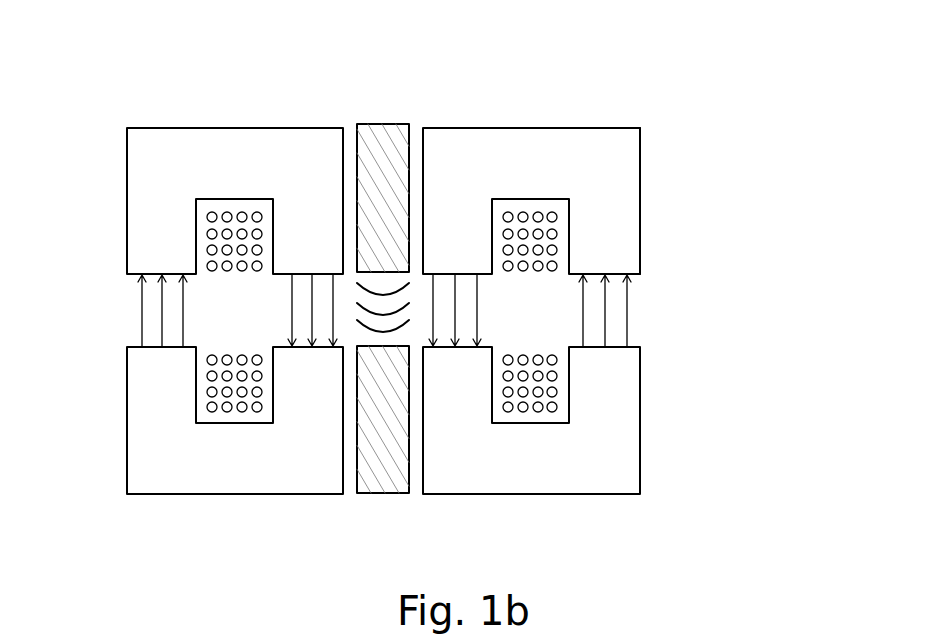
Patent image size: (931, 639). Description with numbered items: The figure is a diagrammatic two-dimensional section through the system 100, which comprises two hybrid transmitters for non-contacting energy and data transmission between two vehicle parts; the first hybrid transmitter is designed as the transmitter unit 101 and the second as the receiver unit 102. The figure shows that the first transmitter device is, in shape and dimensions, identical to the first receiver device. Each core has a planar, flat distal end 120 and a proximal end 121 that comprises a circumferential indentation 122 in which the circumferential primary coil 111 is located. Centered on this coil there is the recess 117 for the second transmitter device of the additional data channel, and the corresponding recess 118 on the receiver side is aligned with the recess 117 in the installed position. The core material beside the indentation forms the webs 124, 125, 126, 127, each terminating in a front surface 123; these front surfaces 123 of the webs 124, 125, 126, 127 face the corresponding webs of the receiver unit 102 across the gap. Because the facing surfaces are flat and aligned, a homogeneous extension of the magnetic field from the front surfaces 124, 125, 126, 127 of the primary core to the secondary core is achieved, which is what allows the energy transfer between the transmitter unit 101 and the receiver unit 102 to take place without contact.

The system 100 is at (86, 144).
The transmitter unit 101 is at (578, 80).
The receiver unit 102 is at (640, 500).
The primary coil 111 is at (548, 214).
The recess 117 is at (353, 125).
The recess 118 is at (412, 487).
The distal end 120 is at (267, 127).
The proximal end 121 is at (150, 282).
The circumferential indentation 122 is at (205, 212).
The front surfaces 123 is at (170, 272).
The web 124 is at (190, 272).
The web 125 is at (340, 282).
The web 126 is at (425, 282).
The web 127 is at (640, 165).